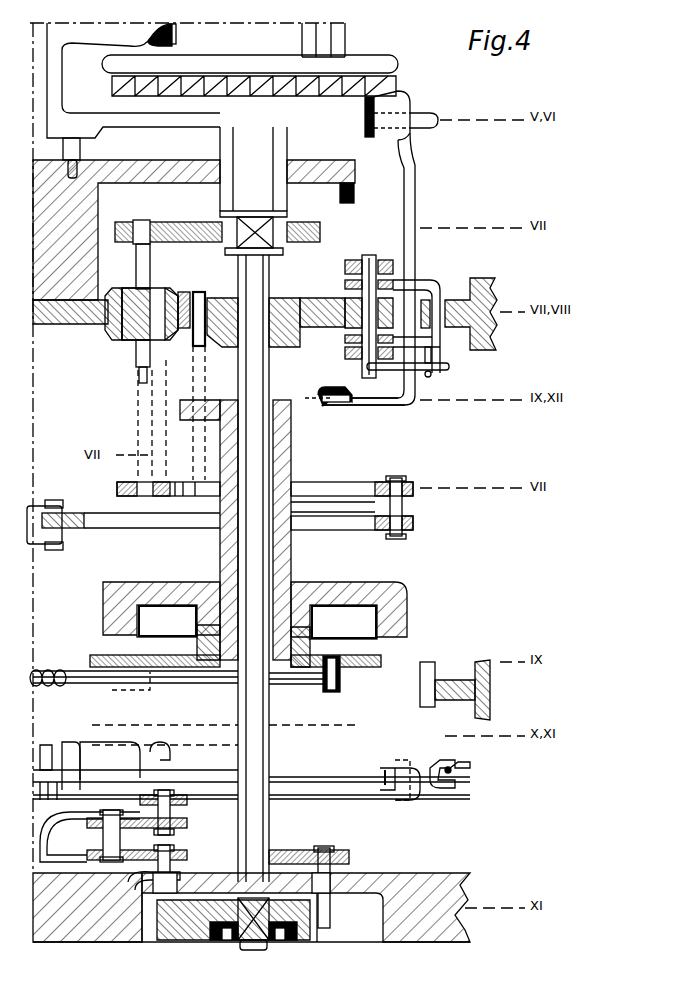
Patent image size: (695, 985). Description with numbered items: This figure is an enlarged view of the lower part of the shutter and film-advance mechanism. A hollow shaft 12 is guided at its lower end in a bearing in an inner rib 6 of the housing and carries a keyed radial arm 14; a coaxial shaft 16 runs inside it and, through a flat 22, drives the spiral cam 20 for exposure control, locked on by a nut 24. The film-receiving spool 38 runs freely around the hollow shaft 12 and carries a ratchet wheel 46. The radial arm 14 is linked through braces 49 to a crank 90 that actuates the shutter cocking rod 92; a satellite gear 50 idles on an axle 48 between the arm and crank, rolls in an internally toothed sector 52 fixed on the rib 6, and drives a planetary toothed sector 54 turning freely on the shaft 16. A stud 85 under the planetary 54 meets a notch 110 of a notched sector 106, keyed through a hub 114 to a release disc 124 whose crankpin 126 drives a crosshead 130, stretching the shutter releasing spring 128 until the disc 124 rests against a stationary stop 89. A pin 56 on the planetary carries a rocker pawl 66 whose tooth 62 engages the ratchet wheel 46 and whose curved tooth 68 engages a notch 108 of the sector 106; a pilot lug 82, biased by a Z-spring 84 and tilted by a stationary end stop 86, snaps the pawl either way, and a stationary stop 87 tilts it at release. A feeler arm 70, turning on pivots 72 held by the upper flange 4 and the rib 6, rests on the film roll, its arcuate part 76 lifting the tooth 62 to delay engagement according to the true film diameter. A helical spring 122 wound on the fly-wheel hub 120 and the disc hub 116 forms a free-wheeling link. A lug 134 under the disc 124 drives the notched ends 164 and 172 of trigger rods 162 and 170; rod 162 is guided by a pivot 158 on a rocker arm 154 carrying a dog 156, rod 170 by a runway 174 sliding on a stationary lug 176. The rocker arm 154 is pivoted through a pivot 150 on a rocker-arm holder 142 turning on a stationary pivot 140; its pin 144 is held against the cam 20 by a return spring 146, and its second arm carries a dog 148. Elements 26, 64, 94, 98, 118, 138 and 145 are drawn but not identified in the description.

The upper flange 4 is at (418, 940).
The inner rib 6 is at (167, 168).
The hollow shaft 12 is at (275, 160).
The radial arm 14 is at (190, 222).
The coaxial shaft 16 is at (269, 268).
The spiral cam 20 is at (180, 935).
The flat 22 is at (228, 942).
The nut 24 is at (290, 940).
The shaft end 26 is at (269, 946).
The film-receiving spool 38 is at (345, 38).
The ratchet wheel 46 is at (112, 83).
The axle 48 is at (136, 266).
The braces 49 is at (155, 400).
The satellite gear 50 is at (140, 322).
The internally toothed sector 52 is at (98, 322).
The planetary toothed sector 54 is at (305, 300).
The pin 56 is at (372, 256).
The tooth 62 is at (410, 100).
The housing wall 64 is at (385, 405).
The rocker pawl 66 is at (416, 195).
The curved tooth 68 is at (345, 410).
The feeler arm 70 is at (176, 33).
The pivots 72 is at (80, 147).
The arcuate part 76 is at (438, 118).
The pilot lug 82 is at (430, 282).
The Z-spring 84 is at (428, 376).
The stud 85 is at (204, 292).
The stationary end stop 86 is at (460, 290).
The stationary stop 87 is at (354, 193).
The stationary stop 89 is at (428, 662).
The crank 90 is at (330, 482).
The shutter cocking rod 92 is at (330, 530).
The bolt 94 is at (396, 476).
The bracket 98 is at (55, 500).
The notched sector 106 is at (291, 410).
The notch 108 is at (325, 410).
The notch 110 is at (205, 420).
The hub 114 is at (220, 556).
The hub of the disc 116 is at (312, 632).
The block 118 is at (407, 625).
The hub of the fly-wheel 120 is at (312, 618).
The helical spring 122 is at (196, 640).
The release disc 124 is at (345, 660).
The crankpin 126 is at (340, 675).
The shutter releasing spring 128 is at (60, 670).
The crosshead 130 is at (300, 684).
The lug 134 is at (145, 690).
The arm 138 is at (95, 742).
The stationary pivot 140 is at (172, 860).
The rocker-arm holder 142 is at (295, 850).
The pin 144 is at (330, 912).
The ledge 145 is at (360, 878).
The return spring 146 is at (180, 876).
The dog 148 is at (47, 745).
The pivot 150 is at (103, 840).
The rocker arm 154 is at (62, 787).
The dog 156 is at (81, 766).
The pivot 158 is at (174, 812).
The trigger rod 162 is at (385, 795).
The notched end 164 is at (380, 760).
The trigger rod 170 is at (312, 780).
The notched end 172 is at (405, 758).
The runway 174 is at (450, 792).
The stationary lug 176 is at (470, 770).